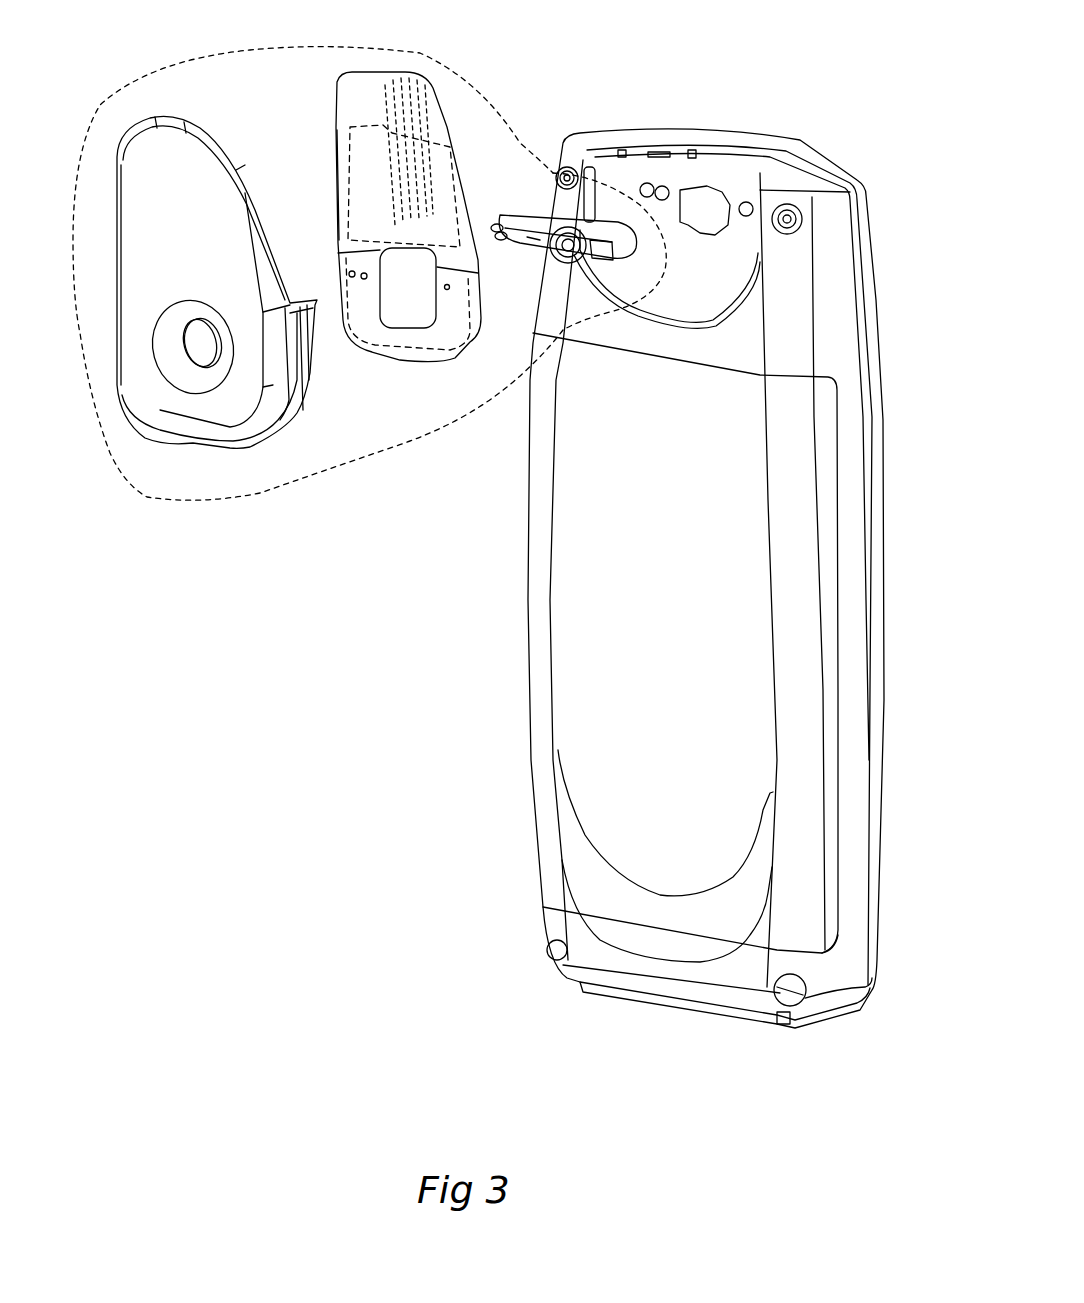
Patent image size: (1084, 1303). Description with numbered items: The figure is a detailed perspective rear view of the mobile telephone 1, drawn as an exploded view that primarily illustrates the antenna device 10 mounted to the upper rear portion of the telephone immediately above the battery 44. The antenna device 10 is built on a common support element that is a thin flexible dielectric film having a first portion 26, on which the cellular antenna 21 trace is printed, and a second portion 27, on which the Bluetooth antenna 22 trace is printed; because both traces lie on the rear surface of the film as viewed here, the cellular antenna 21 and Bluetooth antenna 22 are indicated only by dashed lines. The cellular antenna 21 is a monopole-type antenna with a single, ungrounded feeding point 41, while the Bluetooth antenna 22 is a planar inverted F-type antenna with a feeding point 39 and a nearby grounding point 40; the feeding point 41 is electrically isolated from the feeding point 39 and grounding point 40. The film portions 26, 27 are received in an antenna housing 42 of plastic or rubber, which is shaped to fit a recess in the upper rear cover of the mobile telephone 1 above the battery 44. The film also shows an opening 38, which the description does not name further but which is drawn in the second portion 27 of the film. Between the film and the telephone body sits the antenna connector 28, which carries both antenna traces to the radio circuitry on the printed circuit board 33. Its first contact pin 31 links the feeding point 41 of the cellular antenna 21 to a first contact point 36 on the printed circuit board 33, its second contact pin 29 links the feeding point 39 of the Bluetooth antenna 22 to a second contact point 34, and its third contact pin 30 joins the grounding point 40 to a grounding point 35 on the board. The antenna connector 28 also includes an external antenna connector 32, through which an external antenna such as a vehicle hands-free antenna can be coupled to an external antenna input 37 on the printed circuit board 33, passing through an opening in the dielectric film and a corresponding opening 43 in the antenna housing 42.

The mobile telephone 1 is at (835, 270).
The antenna device 10 is at (219, 76).
The cellular antenna 21 is at (353, 88).
The Bluetooth antenna 22 is at (390, 353).
The first portion of flexible dielectric film 26 is at (337, 127).
The second portion of flexible dielectric film 27 is at (337, 236).
The antenna connector 28 is at (535, 218).
The second contact pin 29 is at (510, 221).
The third contact pin 30 is at (527, 237).
The first contact pin 31 is at (612, 262).
The external antenna connector 32 is at (560, 263).
The printed circuit board 33 is at (623, 170).
The second contact point 34 is at (647, 183).
The grounding point on printed circuit board 35 is at (665, 185).
The first contact point 36 is at (750, 200).
The external antenna input 37 is at (705, 200).
The lens window 38 is at (420, 290).
The feeding point of Bluetooth antenna 39 is at (347, 272).
The grounding point of Bluetooth antenna 40 is at (361, 277).
The feeding point of cellular antenna 41 is at (449, 289).
The antenna housing 42 is at (143, 260).
The opening in antenna housing 43 is at (205, 347).
The battery 44 is at (570, 578).